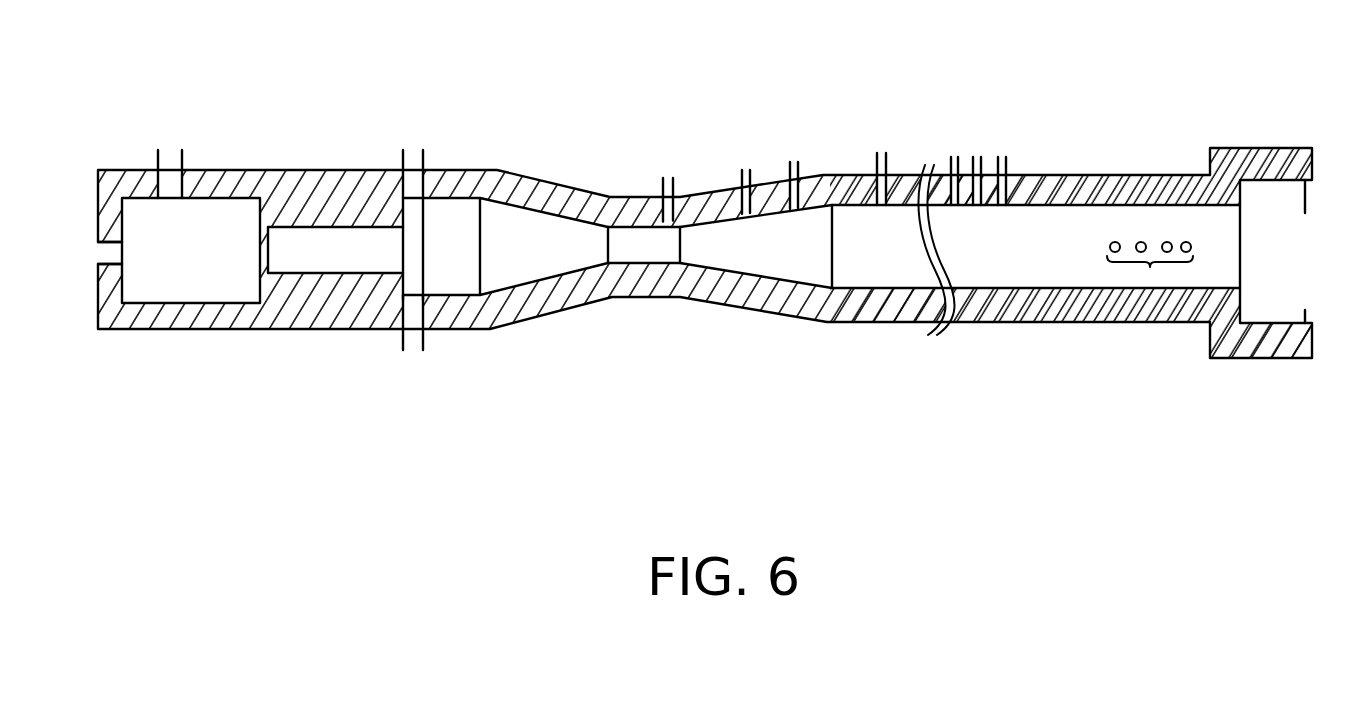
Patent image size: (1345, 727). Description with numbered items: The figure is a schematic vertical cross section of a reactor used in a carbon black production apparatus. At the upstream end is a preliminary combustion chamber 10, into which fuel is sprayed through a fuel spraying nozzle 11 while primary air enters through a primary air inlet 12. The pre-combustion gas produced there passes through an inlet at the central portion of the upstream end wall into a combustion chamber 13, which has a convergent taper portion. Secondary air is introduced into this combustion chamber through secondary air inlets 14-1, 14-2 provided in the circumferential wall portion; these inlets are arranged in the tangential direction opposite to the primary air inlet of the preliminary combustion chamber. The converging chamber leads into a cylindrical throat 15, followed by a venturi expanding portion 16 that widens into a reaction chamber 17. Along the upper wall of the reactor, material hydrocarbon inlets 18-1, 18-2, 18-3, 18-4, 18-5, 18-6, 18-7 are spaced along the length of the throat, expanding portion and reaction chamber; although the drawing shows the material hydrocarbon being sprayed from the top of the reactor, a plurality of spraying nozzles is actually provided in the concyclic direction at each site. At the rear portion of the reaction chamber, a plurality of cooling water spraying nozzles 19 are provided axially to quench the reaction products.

The preliminary combustion chamber 10 is at (175, 263).
The fuel spraying nozzle 11 is at (102, 252).
The primary air inlet 12 is at (170, 152).
The combustion chamber 13 is at (517, 265).
The secondary air inlet 14-1 is at (413, 150).
The secondary air inlet 14-2 is at (410, 340).
The cylindrical throat 15 is at (642, 253).
The venturi expanding portion 16 is at (753, 260).
The reaction chamber 17 is at (1007, 265).
The material hydrocarbon inlet 18-1 is at (667, 175).
The material hydrocarbon inlet 18-2 is at (745, 168).
The material hydrocarbon inlet 18-3 is at (790, 160).
The material hydrocarbon inlet 18-4 is at (883, 150).
The material hydrocarbon inlet 18-5 is at (955, 153).
The material hydrocarbon inlet 18-6 is at (977, 157).
The material hydrocarbon inlet 18-7 is at (1003, 157).
The cooling water spraying nozzles 19 is at (1150, 267).